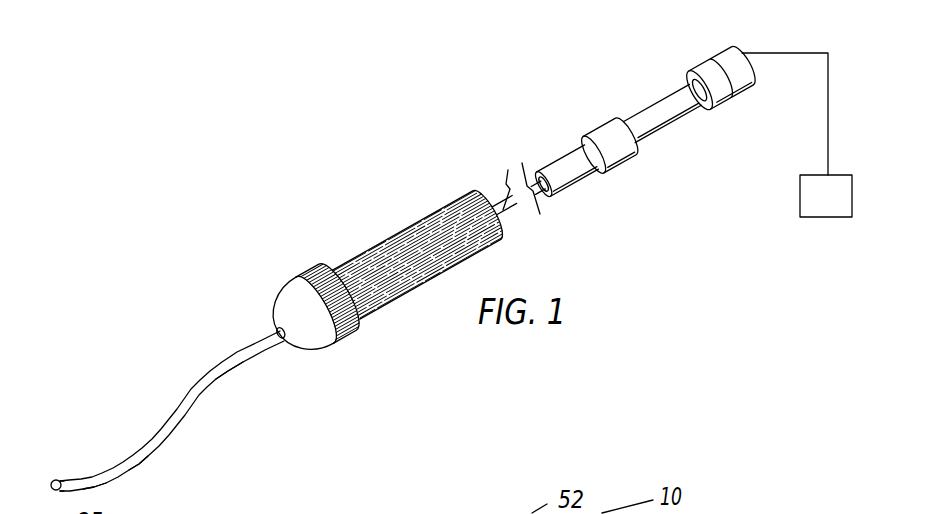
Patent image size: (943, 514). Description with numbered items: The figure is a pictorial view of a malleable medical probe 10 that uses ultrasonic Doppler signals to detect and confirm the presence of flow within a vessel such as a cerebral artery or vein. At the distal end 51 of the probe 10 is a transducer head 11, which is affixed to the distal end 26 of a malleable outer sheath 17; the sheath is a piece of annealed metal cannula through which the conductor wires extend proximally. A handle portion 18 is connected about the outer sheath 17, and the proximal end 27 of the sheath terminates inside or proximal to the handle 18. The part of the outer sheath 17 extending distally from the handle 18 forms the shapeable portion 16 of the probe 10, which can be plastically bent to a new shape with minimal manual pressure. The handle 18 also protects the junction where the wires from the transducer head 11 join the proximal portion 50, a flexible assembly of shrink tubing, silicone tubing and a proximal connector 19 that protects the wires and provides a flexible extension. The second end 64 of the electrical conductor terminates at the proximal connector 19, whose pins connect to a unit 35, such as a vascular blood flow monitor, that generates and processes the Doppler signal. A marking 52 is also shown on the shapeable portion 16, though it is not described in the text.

The malleable medical probe 10 is at (272, 191).
The transducer head 11 is at (66, 513).
The shapeable portion 16 is at (164, 396).
The outer sheath 17 is at (222, 377).
The handle portion 18 is at (370, 257).
The proximal connector 19 is at (728, 60).
The distal end 26 is at (100, 491).
The proximal end 27 is at (282, 356).
The unit 35 is at (807, 202).
The proximal portion 50 is at (580, 113).
The distal end 51 is at (50, 468).
The shaft marking 52 is at (116, 433).
The second end 64 is at (684, 62).